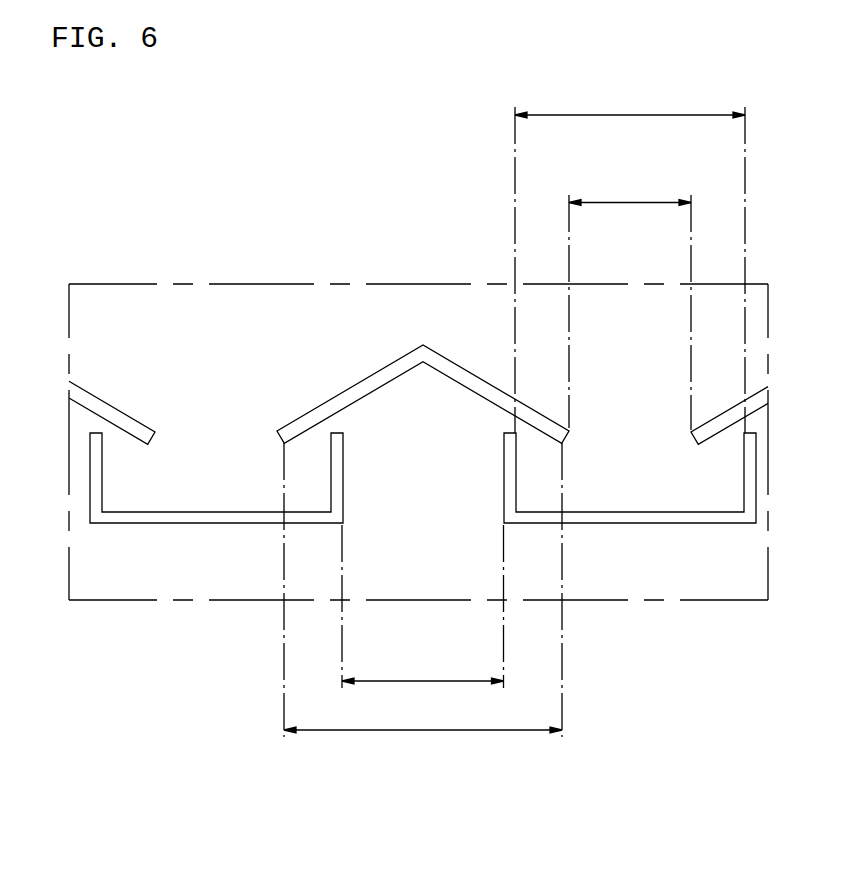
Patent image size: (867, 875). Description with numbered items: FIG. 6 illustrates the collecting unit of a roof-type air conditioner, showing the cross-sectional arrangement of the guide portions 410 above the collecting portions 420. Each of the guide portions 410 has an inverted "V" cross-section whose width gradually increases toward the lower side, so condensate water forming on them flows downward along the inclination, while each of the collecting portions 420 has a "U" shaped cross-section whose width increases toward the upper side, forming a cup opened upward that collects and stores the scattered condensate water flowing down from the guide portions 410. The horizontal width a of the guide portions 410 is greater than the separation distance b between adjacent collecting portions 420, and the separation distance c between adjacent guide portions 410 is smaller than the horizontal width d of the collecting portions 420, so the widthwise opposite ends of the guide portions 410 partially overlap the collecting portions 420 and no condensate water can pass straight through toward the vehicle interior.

The guide portions 410 is at (380, 380).
The collecting portions 420 is at (239, 515).
The horizontal width of the guide portions a is at (423, 742).
The separation distance between adjacent collecting portions b is at (423, 693).
The separation distance between adjacent guide portions c is at (630, 191).
The horizontal width of the collecting portions d is at (630, 103).